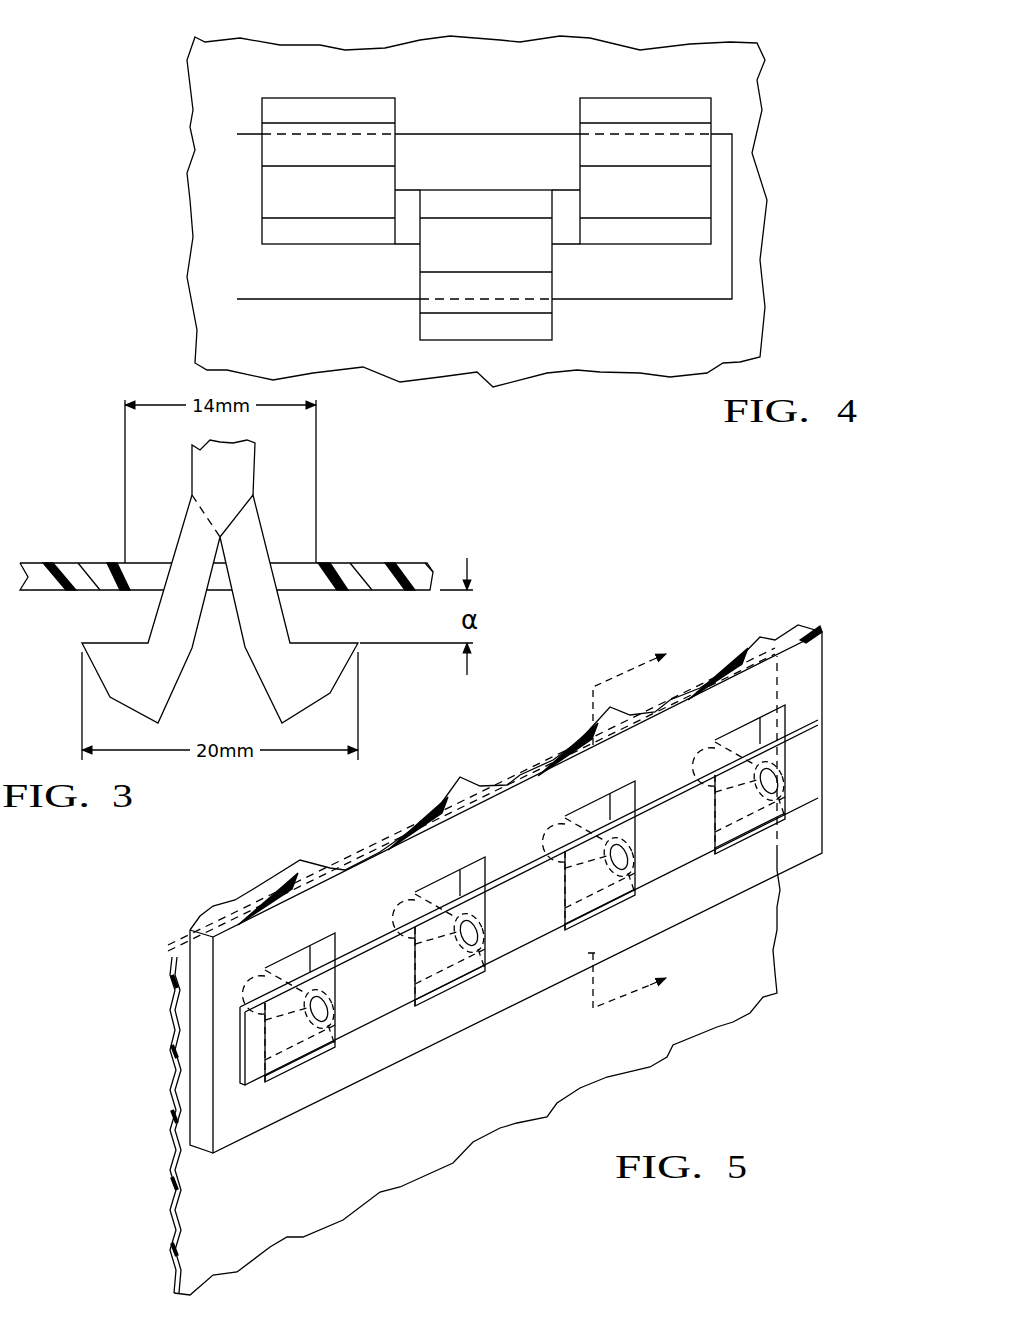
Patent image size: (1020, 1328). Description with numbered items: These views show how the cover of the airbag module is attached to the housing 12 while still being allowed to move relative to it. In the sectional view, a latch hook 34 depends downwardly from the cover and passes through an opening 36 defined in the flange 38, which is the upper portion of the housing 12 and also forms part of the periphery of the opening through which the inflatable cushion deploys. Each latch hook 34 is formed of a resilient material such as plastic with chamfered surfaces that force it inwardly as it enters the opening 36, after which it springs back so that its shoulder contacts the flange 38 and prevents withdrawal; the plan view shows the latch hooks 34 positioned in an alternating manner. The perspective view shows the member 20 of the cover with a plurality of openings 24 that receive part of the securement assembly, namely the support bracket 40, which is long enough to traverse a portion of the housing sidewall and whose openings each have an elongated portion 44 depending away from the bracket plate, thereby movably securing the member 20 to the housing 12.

In FIG. 5, the housing 12 is at (295, 1197).
In FIG. 5, the member 20 is at (527, 865).
In FIG. 5, the opening 24 is at (327, 953).
In FIG. 4, the latch hook 34 is at (298, 108).
In FIG. 3, the latch hook 34 is at (168, 623).
In FIG. 3, the opening 36 is at (122, 572).
In FIG. 3, the flange 38 is at (403, 563).
In FIG. 5, the support bracket 40 is at (808, 809).
In FIG. 5, the elongated portion 44 is at (425, 903).